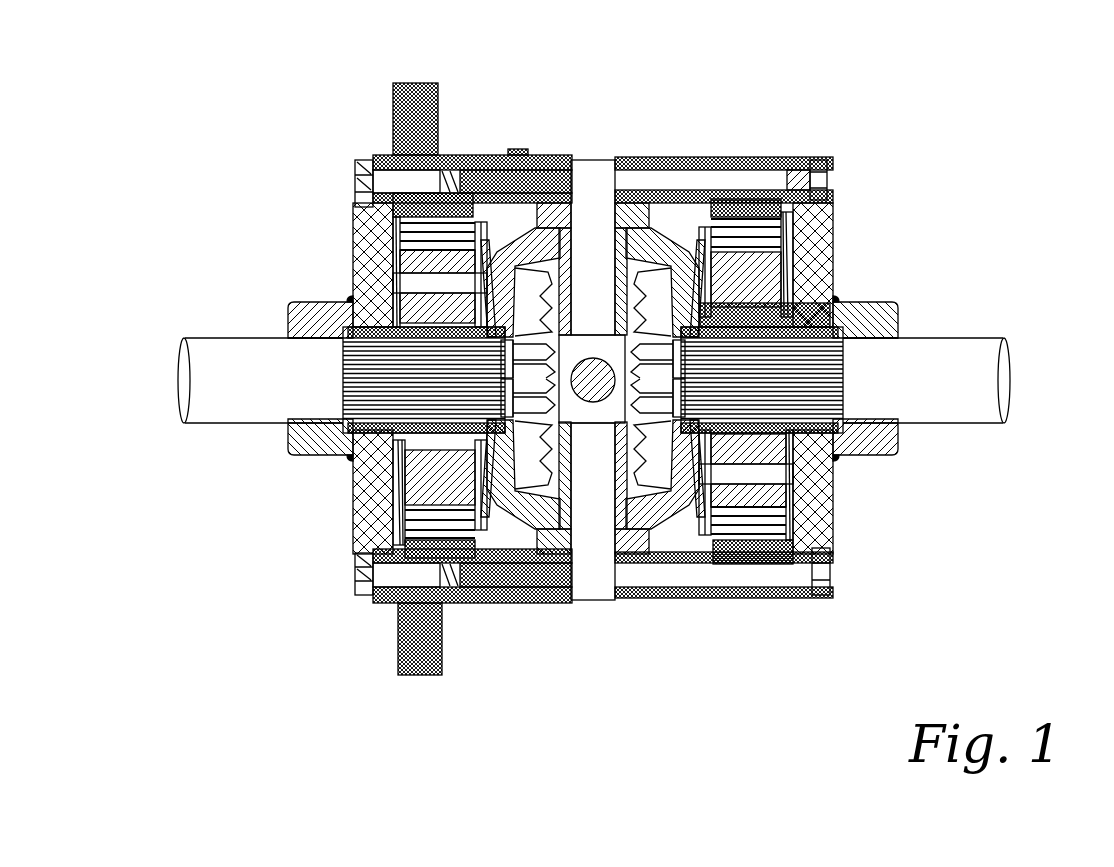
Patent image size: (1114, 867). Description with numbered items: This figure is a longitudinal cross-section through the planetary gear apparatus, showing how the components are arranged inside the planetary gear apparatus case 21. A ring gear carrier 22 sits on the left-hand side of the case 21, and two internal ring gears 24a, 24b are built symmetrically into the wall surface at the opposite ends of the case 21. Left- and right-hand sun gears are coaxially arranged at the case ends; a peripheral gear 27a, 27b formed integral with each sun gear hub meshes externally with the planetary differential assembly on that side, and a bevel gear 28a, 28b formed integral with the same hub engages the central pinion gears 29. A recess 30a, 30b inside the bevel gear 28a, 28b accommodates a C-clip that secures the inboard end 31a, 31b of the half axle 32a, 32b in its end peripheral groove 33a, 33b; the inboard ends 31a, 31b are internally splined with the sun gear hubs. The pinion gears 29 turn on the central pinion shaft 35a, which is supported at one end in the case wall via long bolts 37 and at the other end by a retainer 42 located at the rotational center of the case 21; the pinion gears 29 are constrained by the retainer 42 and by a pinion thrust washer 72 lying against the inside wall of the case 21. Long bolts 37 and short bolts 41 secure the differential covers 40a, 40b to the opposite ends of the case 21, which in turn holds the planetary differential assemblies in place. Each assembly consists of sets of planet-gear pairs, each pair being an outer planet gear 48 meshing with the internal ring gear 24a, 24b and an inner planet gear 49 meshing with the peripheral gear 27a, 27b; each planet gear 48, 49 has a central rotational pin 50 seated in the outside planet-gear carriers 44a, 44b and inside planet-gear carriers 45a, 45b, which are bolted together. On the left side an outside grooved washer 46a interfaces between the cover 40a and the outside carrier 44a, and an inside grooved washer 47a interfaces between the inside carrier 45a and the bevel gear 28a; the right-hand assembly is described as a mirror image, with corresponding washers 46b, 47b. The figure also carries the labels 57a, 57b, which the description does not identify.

The planetary gear apparatus case 21 is at (458, 190).
The ring gear carrier 22 is at (405, 92).
The internal ring gear 24a is at (440, 197).
The internal ring gear 24b is at (730, 207).
The peripheral gear 27a is at (445, 313).
The peripheral gear 27b is at (805, 237).
The bevel gear 28a is at (497, 543).
The bevel gear 28b is at (632, 510).
The central pinion gears 29 is at (548, 238).
The recess 30a is at (487, 467).
The recess 30b is at (680, 435).
The inboard end 31a is at (357, 387).
The inboard end 31b is at (829, 387).
The half axle 32a is at (223, 400).
The half axle 32b is at (950, 358).
The end peripheral groove 33a is at (350, 452).
The end peripheral groove 33b is at (837, 452).
The short pinion shaft 35a is at (587, 193).
The long bolts 37 is at (772, 177).
The differential cover 40a is at (370, 472).
The differential cover 40b is at (812, 482).
The short bolts 41 is at (388, 181).
The retainer 42 is at (507, 395).
The outside planet-gear carrier 44a is at (420, 212).
The outside planet-gear carrier 44b is at (795, 228).
The inside planet-gear carrier 45a is at (405, 545).
The inside planet-gear carrier 45b is at (683, 490).
The outside grooved washer 46a is at (427, 282).
The clutch plate 46b is at (757, 282).
The inside grooved washer 47a is at (492, 238).
The thrust washer 47b is at (692, 238).
The outer planet gear 48 is at (433, 203).
The inner planet gear 49 is at (425, 263).
The central rotational pin 50 is at (375, 325).
The housing flange 57a is at (293, 302).
The housing flange 57b is at (893, 302).
The pinion thrust washer 72 is at (627, 210).